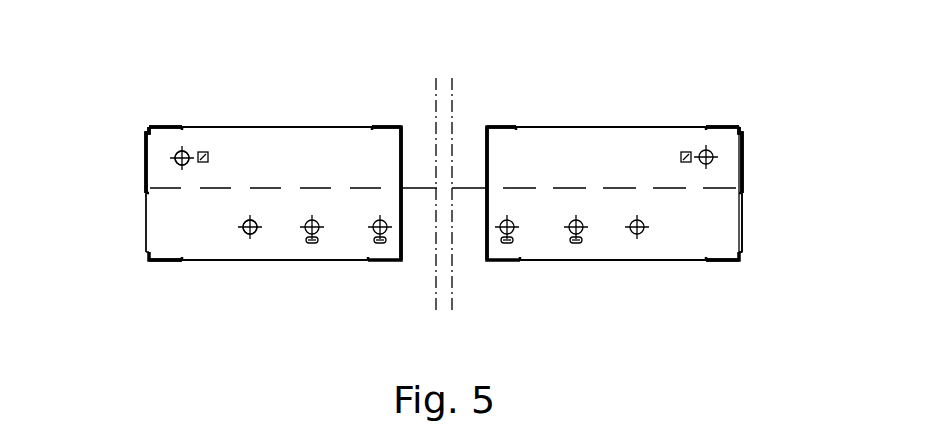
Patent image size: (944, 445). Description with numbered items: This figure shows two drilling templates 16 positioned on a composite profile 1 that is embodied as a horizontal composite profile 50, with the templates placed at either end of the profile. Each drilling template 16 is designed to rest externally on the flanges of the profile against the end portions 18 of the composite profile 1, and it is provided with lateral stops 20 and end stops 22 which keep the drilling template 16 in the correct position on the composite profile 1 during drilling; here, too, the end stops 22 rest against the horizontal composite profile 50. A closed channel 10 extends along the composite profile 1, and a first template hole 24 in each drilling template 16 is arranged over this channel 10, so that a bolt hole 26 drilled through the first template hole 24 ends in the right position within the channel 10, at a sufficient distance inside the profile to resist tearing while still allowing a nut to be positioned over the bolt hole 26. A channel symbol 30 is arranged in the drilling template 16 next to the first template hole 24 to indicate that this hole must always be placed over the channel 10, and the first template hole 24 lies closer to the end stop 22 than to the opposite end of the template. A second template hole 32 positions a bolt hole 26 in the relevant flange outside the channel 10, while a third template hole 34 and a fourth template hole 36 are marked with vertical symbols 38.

The composite profile 1 is at (483, 98).
The channel 10 is at (543, 150).
The drilling template 16 is at (337, 137).
The end portion 18 is at (135, 122).
The lateral stop 20 is at (268, 127).
The end stop 22 is at (146, 228).
The first template hole 24 is at (181, 150).
The bolt hole 26 is at (176, 162).
The channel symbol 30 is at (203, 151).
The second template hole 32 is at (257, 234).
The third template hole 34 is at (306, 236).
The fourth template hole 36 is at (387, 231).
The vertical symbol 38 is at (312, 244).
The horizontal composite profile 50 is at (423, 145).